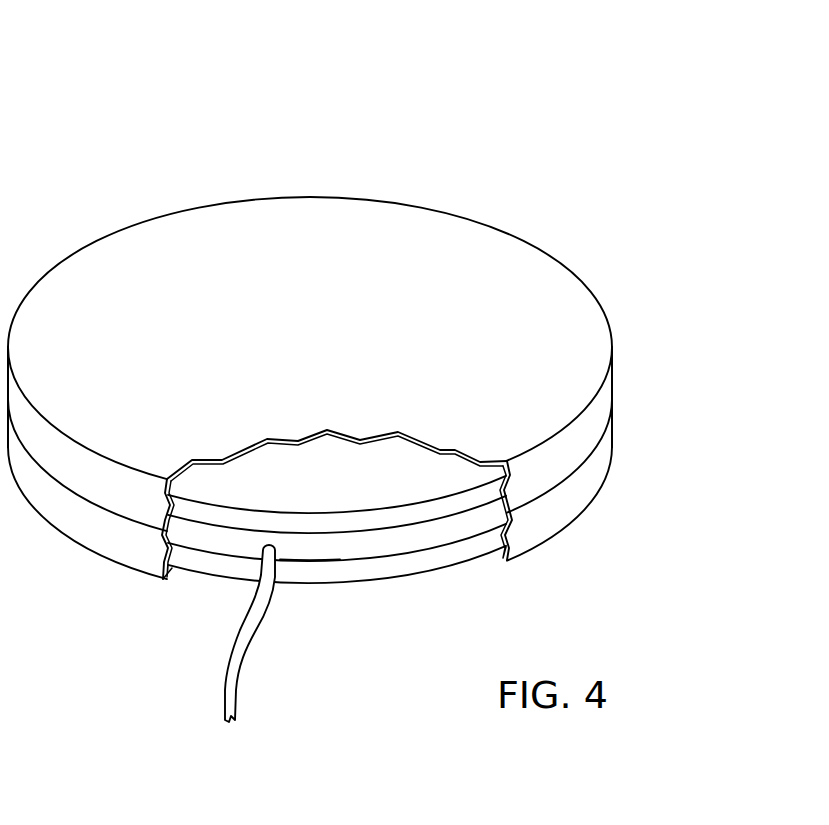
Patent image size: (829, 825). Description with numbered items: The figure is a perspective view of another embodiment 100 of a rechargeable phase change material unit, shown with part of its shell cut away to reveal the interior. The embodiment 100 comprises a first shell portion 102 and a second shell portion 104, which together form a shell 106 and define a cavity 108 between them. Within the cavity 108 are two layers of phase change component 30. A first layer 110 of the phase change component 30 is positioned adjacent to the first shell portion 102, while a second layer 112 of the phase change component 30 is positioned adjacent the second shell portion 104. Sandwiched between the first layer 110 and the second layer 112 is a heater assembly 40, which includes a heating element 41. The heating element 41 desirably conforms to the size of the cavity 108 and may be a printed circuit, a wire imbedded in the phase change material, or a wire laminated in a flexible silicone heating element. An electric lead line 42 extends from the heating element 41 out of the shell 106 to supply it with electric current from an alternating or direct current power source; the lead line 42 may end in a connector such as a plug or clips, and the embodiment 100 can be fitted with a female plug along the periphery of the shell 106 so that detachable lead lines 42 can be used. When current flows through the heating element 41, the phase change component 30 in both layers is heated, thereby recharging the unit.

The embodiment 100 is at (142, 180).
The shell 106 is at (498, 227).
The first shell portion 102 is at (607, 395).
The second shell portion 104 is at (611, 453).
The cavity 108 is at (503, 562).
The second layer 112 is at (187, 568).
The phase change component 30 is at (248, 465).
The first layer 110 is at (355, 525).
The heating element 41 is at (308, 550).
The heater assembly 40 is at (418, 550).
The electric lead line 42 is at (237, 675).